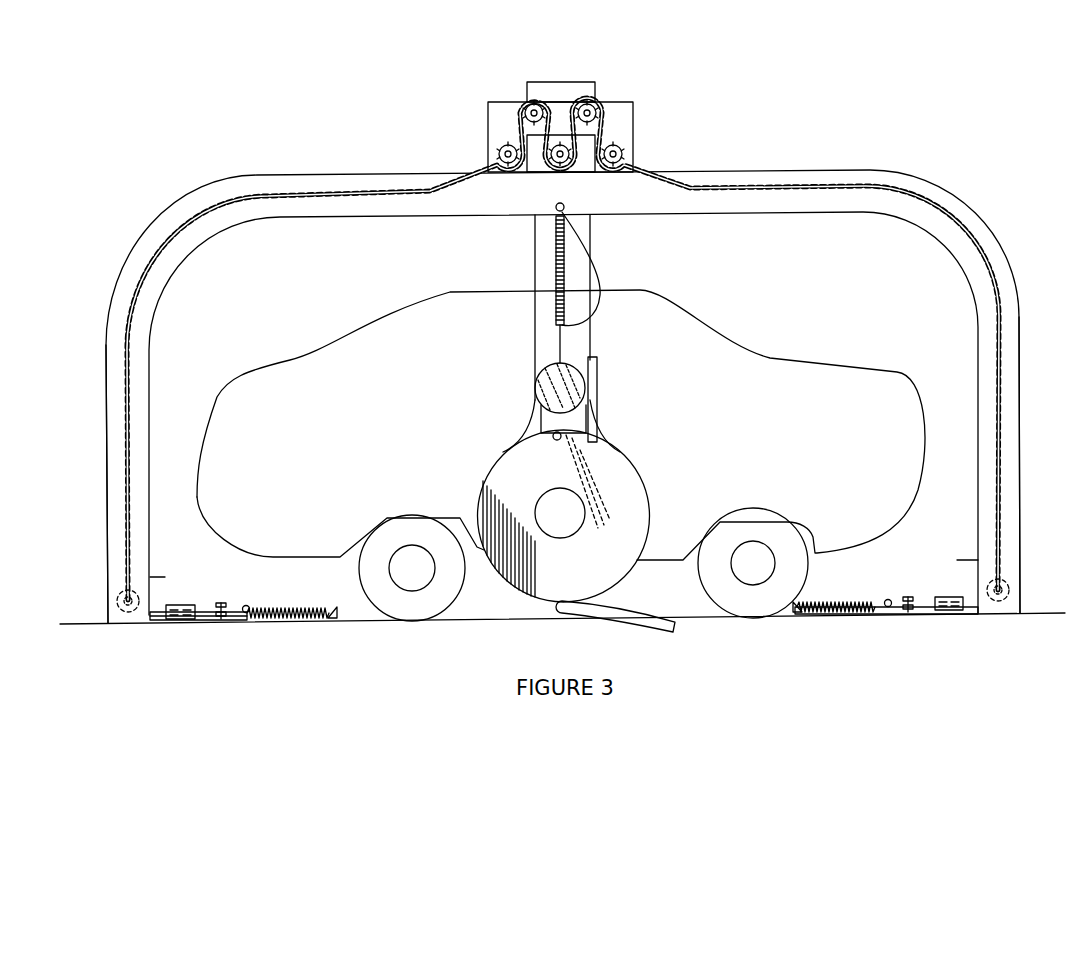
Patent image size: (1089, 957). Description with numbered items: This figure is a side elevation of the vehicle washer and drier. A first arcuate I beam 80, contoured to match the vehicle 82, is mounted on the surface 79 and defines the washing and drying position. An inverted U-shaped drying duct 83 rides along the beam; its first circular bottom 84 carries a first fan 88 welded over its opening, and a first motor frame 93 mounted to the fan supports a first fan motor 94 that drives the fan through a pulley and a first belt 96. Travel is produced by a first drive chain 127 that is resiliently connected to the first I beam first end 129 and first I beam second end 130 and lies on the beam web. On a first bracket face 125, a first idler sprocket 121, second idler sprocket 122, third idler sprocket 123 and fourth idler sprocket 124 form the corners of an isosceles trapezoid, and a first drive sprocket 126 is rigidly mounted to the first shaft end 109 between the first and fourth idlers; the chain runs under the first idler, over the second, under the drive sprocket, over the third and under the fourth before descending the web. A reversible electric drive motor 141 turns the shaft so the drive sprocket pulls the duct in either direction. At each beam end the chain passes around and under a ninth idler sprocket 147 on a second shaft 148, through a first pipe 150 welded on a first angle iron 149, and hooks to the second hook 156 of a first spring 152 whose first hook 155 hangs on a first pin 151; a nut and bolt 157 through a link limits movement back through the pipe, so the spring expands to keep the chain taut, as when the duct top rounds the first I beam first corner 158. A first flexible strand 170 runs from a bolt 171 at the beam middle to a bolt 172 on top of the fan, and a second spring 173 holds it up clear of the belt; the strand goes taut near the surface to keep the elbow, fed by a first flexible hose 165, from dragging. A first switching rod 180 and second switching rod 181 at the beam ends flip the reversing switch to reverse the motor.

The surface 79 is at (704, 618).
The first arcuate I beam 80 is at (445, 217).
The vehicle 82 is at (700, 320).
The drying duct 83 is at (596, 255).
The first circular bottom 84 is at (534, 589).
The first fan 88 is at (649, 500).
The first motor frame 93 is at (597, 392).
The first fan motor 94 is at (538, 386).
The first belt 96 is at (540, 421).
The first shaft end 109 is at (570, 163).
The first idler sprocket 121 is at (497, 148).
The second idler sprocket 122 is at (527, 102).
The third idler sprocket 123 is at (596, 102).
The fourth idler sprocket 124 is at (627, 155).
The first bracket face 125 is at (622, 120).
The first drive sprocket 126 is at (547, 162).
The first drive chain 127 is at (137, 300).
The first I beam first end 129 is at (106, 552).
The first I beam second end 130 is at (1020, 560).
The reversible electric drive motor 141 is at (558, 83).
The ninth idler sprocket 147 is at (116, 600).
The second shaft 148 is at (108, 622).
The first angle iron 149 is at (200, 621).
The first pipe 150 is at (188, 605).
The first pin 151 is at (335, 621).
The first spring 152 is at (271, 608).
The first hook 155 is at (333, 609).
The second hook 156 is at (236, 619).
The nut and bolt 157 is at (228, 603).
The first I beam first corner 158 is at (168, 215).
The first flexible hose 165 is at (610, 615).
The first flexible strand 170 is at (590, 237).
The bolt 171 is at (555, 210).
The bolt 172 is at (556, 441).
The second spring 173 is at (556, 278).
The first switching rod 180 is at (165, 577).
The second switching rod 181 is at (957, 560).